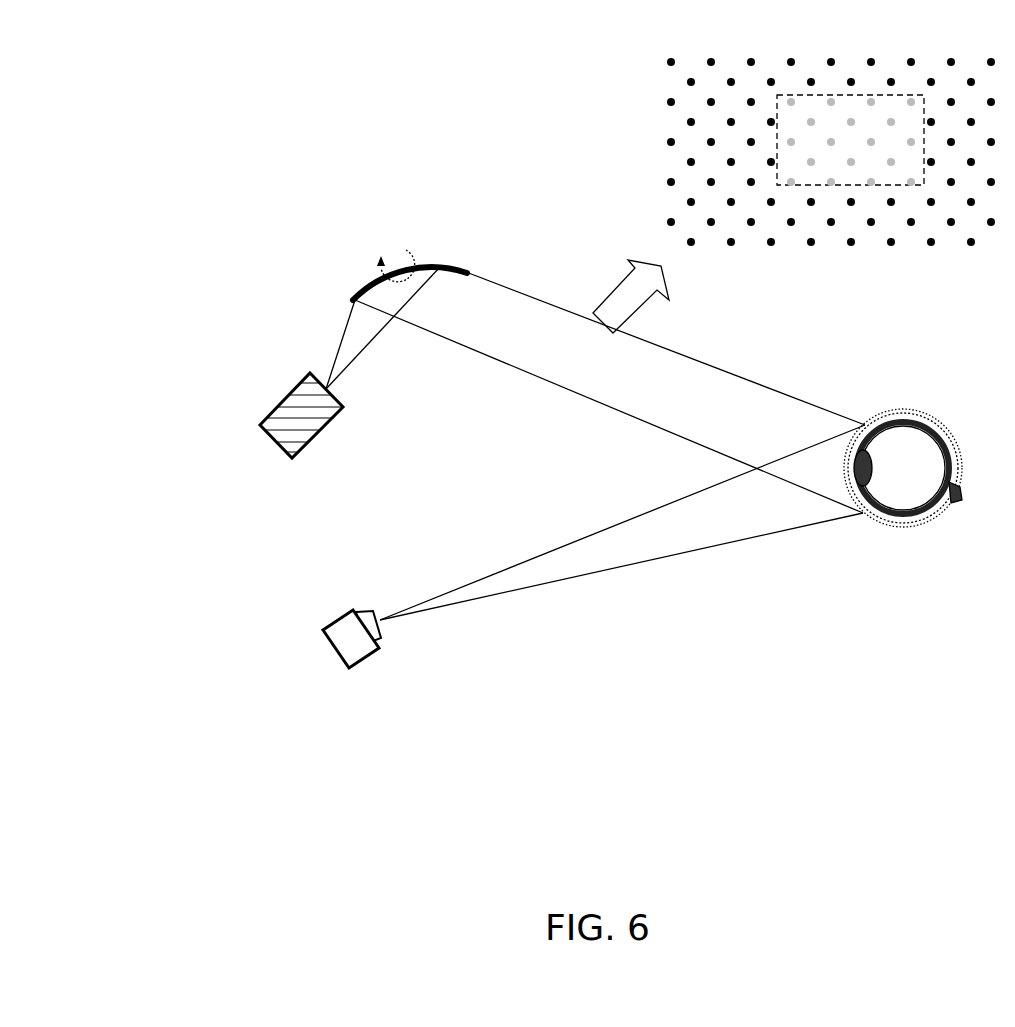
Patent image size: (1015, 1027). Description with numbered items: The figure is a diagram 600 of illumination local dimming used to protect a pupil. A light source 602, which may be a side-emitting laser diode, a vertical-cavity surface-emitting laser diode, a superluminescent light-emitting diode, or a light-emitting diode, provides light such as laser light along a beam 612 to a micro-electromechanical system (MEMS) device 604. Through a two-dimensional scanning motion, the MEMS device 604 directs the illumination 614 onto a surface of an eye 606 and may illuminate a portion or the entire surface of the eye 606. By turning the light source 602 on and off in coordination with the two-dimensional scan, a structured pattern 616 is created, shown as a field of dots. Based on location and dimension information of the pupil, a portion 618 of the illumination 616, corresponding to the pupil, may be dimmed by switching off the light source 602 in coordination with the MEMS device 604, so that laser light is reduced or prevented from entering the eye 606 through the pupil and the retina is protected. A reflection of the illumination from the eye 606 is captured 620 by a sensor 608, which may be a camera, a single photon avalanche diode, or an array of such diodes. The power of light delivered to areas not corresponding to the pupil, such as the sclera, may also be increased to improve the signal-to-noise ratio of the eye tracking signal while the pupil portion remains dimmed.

The diagram 600 is at (567, 45).
The light source 602 is at (260, 425).
The micro-electromechanical system (MEMS) device 604 is at (358, 293).
The eye 606 is at (913, 530).
The sensor 608 is at (327, 647).
The light beam from light source to MEMS 612 is at (330, 362).
The illumination 614 is at (513, 358).
The structured pattern 616 is at (970, 245).
The portion of the illumination 618 is at (851, 245).
The captured reflection 620 is at (635, 567).